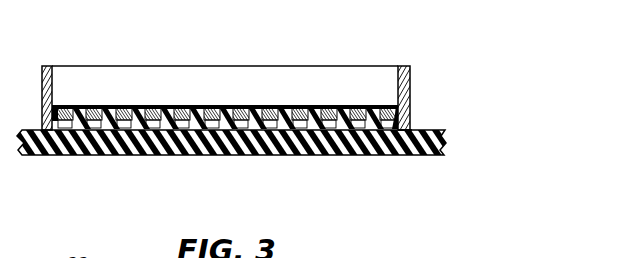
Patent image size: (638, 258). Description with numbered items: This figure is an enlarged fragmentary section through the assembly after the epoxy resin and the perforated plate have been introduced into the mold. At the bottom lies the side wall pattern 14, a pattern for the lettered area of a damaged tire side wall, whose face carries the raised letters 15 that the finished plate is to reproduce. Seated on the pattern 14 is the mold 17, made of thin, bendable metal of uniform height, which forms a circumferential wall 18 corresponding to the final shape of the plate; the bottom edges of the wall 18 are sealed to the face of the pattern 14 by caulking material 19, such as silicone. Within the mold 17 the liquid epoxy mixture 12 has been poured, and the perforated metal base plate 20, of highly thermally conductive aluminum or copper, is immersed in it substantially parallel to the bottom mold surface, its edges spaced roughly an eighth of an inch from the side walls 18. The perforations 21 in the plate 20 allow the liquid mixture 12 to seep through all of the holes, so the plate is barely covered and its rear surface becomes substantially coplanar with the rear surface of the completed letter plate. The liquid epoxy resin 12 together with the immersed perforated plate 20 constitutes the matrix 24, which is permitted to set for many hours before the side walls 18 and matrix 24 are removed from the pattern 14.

The liquid epoxy mixture 12 is at (372, 125).
The side wall pattern 14 is at (288, 148).
The raised letters 15 is at (277, 132).
The mold 17 is at (163, 86).
The circumferential wall 18 is at (301, 91).
The caulking material 19 is at (412, 129).
The perforated metal base plate 20 is at (93, 106).
The perforations 21 is at (104, 110).
The matrix 24 is at (233, 101).